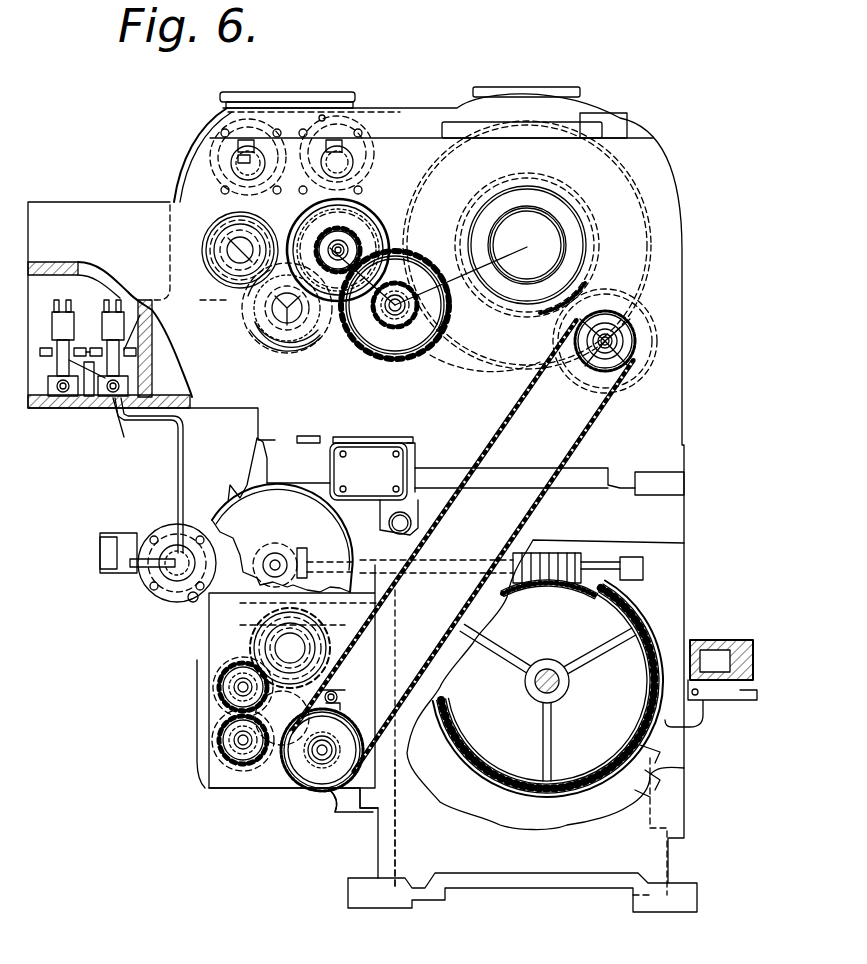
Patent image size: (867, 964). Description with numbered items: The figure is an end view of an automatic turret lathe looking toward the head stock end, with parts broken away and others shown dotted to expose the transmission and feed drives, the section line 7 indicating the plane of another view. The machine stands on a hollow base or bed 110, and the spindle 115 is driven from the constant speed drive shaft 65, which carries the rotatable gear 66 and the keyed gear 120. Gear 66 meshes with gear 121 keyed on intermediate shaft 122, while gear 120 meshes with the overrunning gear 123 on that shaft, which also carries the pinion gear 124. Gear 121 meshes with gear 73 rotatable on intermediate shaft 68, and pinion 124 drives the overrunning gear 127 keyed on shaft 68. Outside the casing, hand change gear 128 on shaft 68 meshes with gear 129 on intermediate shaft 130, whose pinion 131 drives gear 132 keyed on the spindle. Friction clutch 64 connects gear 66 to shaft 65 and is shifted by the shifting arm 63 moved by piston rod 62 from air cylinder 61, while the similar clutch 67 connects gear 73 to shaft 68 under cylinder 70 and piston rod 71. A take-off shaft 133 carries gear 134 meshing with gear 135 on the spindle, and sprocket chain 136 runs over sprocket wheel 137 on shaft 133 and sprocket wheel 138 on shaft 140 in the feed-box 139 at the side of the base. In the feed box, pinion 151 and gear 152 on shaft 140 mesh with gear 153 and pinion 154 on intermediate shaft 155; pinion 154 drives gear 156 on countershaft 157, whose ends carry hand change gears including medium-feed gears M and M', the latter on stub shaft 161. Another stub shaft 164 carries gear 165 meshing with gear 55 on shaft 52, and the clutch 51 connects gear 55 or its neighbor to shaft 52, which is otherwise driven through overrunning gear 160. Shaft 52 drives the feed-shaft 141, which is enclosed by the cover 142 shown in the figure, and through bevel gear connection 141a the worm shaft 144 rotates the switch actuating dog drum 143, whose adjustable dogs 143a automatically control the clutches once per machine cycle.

The section line 7 is at (209, 216).
The clutch 51 is at (256, 650).
The shaft 52 is at (278, 646).
The gear 55 is at (345, 626).
The air cylinder 61 is at (203, 142).
The piston rod 62 is at (207, 163).
The shifting arm 63 is at (195, 192).
The friction clutch 64 is at (212, 240).
The constant speed drive shaft 65 is at (220, 262).
The gear 66 is at (234, 290).
The friction clutch 67 is at (400, 231).
The intermediate shaft 68 is at (343, 233).
The cylinder 70 is at (351, 124).
The piston rod 71 is at (367, 130).
The gear 73 is at (403, 221).
The base or bed 110 is at (413, 825).
The spindle 115 is at (578, 312).
The gear 120 is at (232, 285).
The gear 121 is at (260, 322).
The intermediate shaft 122 is at (274, 358).
The overrunning gear 123 is at (264, 340).
The pinion gear 124 is at (272, 354).
The overrunning gear 127 is at (304, 352).
The gear 128 is at (356, 240).
The gear 129 is at (418, 358).
The intermediate shaft 130 is at (447, 320).
The pinion gear 131 is at (428, 303).
The gear 132 is at (456, 366).
The take-off shaft 133 is at (626, 340).
The gear 134 is at (527, 245).
The gear 135 is at (547, 245).
The sprocket chain 136 is at (508, 427).
The sprocket wheel 137 is at (588, 363).
The sprocket wheel 138 is at (305, 770).
The transmission feed-box 139 is at (365, 790).
The shaft 140 is at (320, 758).
The feed-shaft 141 is at (270, 553).
The bevel gear connection 141a is at (302, 548).
The cover 142 is at (282, 538).
The switch actuating dog drum 143 is at (645, 672).
The dogs 143a is at (645, 772).
The worm shaft 144 is at (447, 560).
The pinion 151 is at (341, 706).
The gear 152 is at (340, 793).
The gear 153 is at (257, 786).
The pinion 154 is at (282, 718).
The intermediate shaft 155 is at (322, 746).
The gear 156 is at (225, 764).
The countershaft 157 is at (233, 747).
The overrunning gear 160 is at (310, 606).
The stub shaft 161 is at (225, 689).
The stub shaft 164 is at (337, 698).
The gear 165 is at (333, 691).
The gear M is at (216, 740).
The gear M' is at (219, 687).